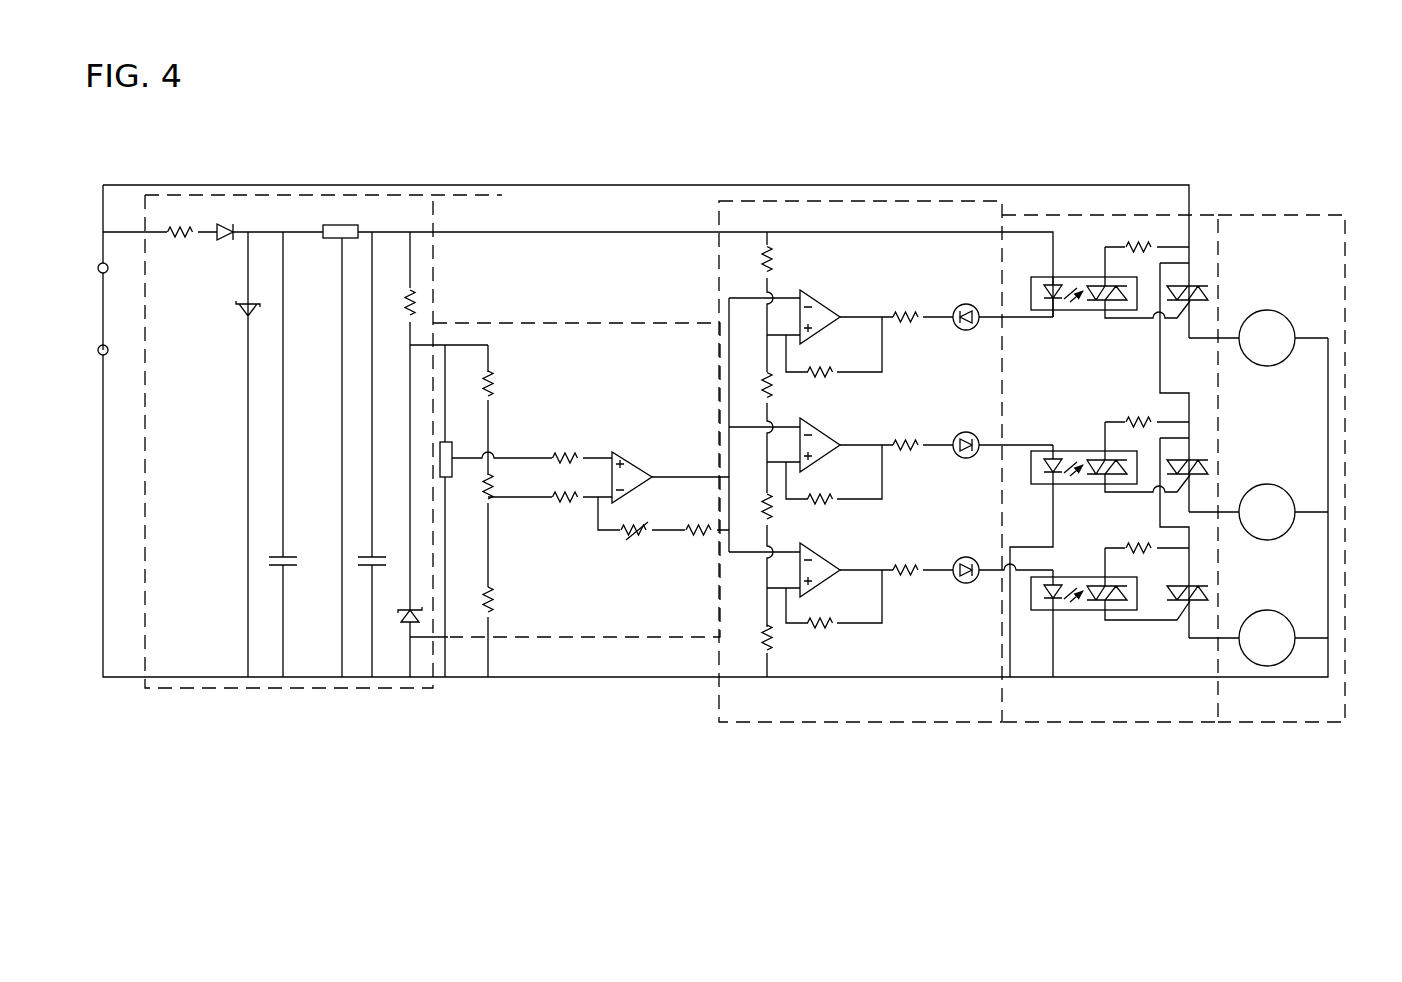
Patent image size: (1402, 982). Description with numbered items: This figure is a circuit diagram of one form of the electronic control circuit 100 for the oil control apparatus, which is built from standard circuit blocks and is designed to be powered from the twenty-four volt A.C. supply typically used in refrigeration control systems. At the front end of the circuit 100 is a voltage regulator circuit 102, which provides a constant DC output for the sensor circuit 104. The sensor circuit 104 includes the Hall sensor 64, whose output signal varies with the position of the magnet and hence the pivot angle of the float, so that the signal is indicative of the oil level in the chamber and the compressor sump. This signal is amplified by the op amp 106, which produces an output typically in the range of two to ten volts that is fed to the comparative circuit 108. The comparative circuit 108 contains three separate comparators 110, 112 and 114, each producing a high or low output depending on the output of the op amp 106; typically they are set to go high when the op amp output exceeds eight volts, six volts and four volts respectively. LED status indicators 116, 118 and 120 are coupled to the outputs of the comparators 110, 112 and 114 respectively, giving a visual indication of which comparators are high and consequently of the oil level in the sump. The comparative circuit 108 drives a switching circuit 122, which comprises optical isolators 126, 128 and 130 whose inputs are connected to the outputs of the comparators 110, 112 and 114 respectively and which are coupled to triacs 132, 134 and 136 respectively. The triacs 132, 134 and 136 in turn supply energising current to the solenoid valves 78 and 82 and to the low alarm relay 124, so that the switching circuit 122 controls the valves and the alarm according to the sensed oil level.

The control circuit 100 is at (312, 172).
The voltage regulator circuit 102 is at (311, 695).
The sensor circuit 104 is at (581, 527).
The Hall sensor 64 is at (455, 437).
The op amp 106 is at (640, 463).
The comparative circuit 108 is at (886, 479).
The first comparator 110 is at (819, 290).
The second comparator 112 is at (832, 428).
The third comparator 114 is at (838, 553).
The LED status indicator 116 is at (966, 302).
The LED status indicator 118 is at (968, 430).
The LED status indicator 120 is at (966, 555).
The switching circuit 122 is at (1194, 476).
The optical isolator 126 is at (1073, 272).
The optical isolator 128 is at (1077, 447).
The optical isolator 130 is at (1073, 572).
The triac 132 is at (1191, 244).
The triac 134 is at (1190, 438).
The triac 136 is at (1178, 627).
The solenoid valve 82 is at (1292, 315).
The solenoid valve 78 is at (1295, 488).
The alarm relay 124 is at (1295, 618).